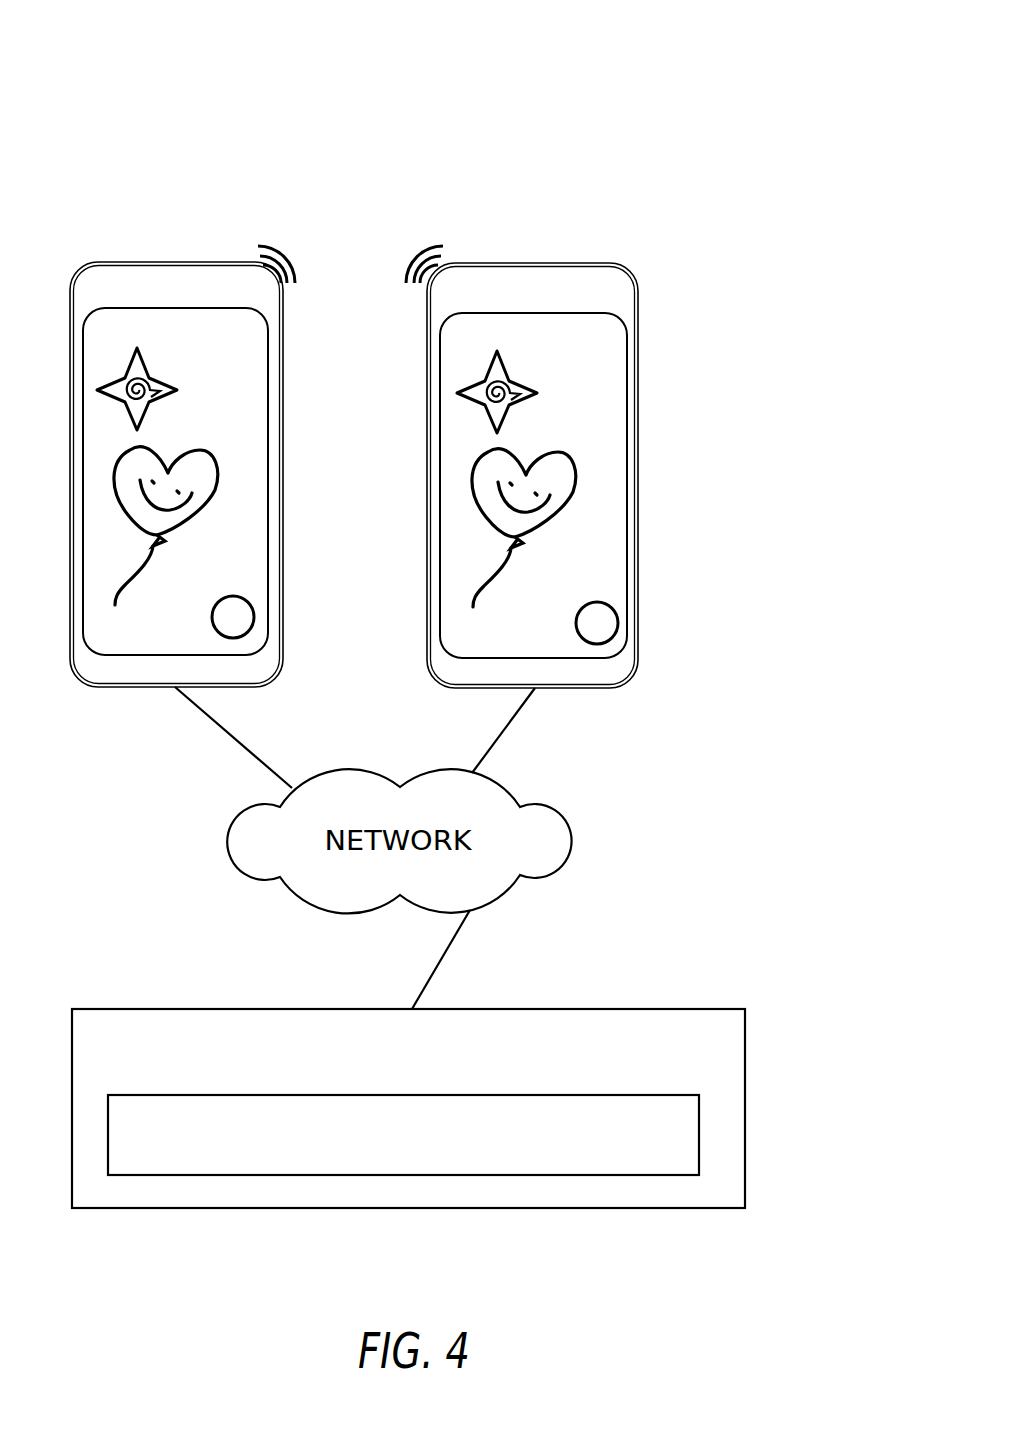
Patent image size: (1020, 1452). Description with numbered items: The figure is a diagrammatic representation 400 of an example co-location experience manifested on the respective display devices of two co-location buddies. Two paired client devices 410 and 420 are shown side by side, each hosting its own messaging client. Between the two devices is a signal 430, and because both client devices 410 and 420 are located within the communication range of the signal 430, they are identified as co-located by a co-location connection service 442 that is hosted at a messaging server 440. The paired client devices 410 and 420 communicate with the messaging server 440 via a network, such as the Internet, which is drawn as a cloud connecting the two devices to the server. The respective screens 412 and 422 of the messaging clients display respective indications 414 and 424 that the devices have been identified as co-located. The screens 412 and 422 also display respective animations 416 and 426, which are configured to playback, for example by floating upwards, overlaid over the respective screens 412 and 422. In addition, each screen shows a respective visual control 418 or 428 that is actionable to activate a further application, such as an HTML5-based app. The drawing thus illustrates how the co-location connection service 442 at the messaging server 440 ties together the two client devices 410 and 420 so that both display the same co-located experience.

The diagrammatic representation 400 is at (765, 37).
The client device 410 is at (285, 450).
The screen 412 is at (132, 310).
The indication 414 is at (248, 597).
The animation 416 is at (150, 441).
The visual control 418 is at (147, 363).
The client device 420 is at (638, 430).
The screen 422 is at (477, 313).
The indication 424 is at (607, 605).
The animation 426 is at (508, 445).
The visual control 428 is at (507, 365).
The signal 430 is at (452, 243).
The messaging server 440 is at (485, 1009).
The co-location connection service 442 is at (605, 1095).